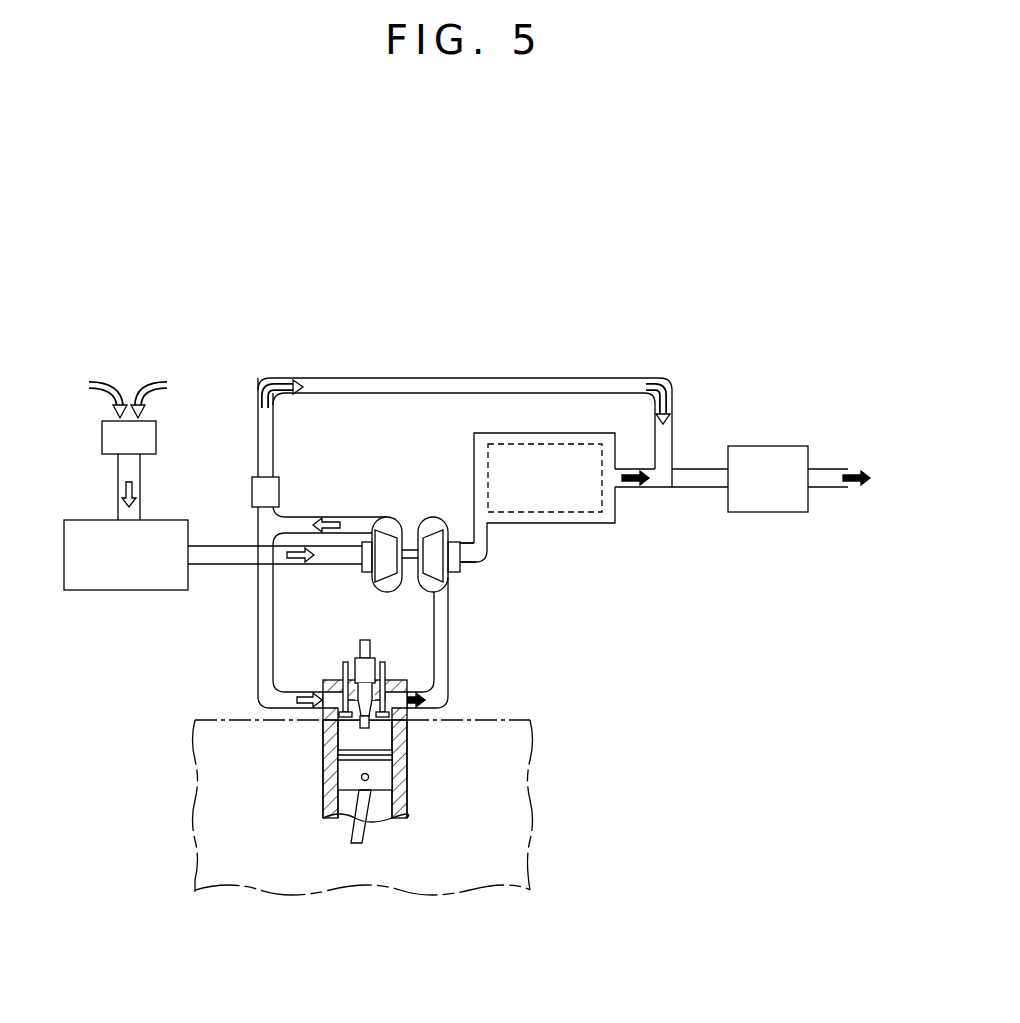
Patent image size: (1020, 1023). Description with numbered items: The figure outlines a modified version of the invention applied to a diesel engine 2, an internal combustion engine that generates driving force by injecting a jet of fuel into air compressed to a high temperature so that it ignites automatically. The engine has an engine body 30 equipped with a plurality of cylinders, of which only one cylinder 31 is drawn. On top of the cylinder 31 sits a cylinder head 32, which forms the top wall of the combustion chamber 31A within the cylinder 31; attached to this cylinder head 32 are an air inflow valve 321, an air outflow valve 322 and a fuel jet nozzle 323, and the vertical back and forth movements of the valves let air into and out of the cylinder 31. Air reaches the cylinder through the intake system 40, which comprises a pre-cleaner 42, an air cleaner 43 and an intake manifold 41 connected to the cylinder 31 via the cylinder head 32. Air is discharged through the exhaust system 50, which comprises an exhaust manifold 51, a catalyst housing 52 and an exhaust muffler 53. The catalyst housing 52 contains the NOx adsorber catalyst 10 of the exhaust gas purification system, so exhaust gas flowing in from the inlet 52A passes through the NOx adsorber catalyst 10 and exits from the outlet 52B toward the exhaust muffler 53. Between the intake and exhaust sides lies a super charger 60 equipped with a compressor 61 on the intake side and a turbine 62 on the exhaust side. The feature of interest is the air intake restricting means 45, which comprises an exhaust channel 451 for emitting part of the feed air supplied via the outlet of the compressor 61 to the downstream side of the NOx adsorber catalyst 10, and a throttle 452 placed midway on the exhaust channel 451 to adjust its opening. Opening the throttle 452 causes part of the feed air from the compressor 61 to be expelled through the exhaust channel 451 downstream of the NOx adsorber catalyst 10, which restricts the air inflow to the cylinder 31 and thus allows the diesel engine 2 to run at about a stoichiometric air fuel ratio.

The diesel engine 2 is at (633, 337).
The NOx adsorber catalyst 10 is at (594, 515).
The engine body 30 is at (535, 768).
The cylinder 31 is at (407, 772).
The combustion chamber 31A is at (382, 733).
The cylinder head 32 is at (322, 712).
The air inflow valve 321 is at (344, 669).
The air outflow valve 322 is at (384, 675).
The fuel jet nozzle 323 is at (371, 642).
The intake system 40 is at (226, 599).
The intake manifold 41 is at (283, 708).
The pre-cleaner 42 is at (108, 430).
The air cleaner 43 is at (92, 520).
The air intake restricting means 45 is at (337, 306).
The exhaust channel 451 is at (330, 378).
The throttle 452 is at (257, 477).
The exhaust system 50 is at (466, 577).
The exhaust manifold 51 is at (452, 705).
The catalyst housing 52 is at (570, 524).
The inlet 52A is at (486, 542).
The outlet 52B is at (620, 488).
The exhaust muffler 53 is at (770, 446).
The super charger 60 is at (421, 474).
The compressor 61 is at (387, 518).
The turbine 62 is at (433, 518).